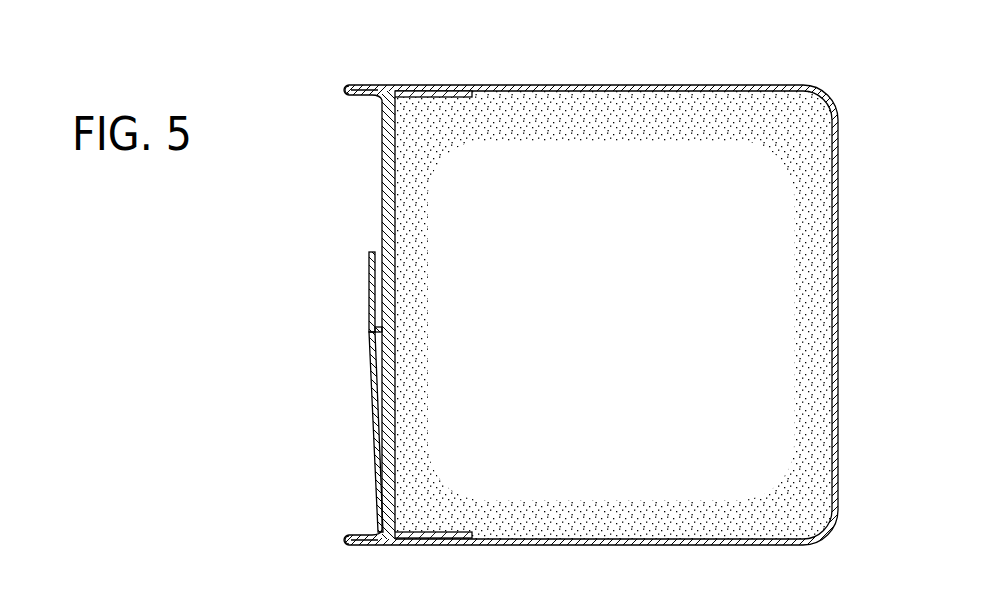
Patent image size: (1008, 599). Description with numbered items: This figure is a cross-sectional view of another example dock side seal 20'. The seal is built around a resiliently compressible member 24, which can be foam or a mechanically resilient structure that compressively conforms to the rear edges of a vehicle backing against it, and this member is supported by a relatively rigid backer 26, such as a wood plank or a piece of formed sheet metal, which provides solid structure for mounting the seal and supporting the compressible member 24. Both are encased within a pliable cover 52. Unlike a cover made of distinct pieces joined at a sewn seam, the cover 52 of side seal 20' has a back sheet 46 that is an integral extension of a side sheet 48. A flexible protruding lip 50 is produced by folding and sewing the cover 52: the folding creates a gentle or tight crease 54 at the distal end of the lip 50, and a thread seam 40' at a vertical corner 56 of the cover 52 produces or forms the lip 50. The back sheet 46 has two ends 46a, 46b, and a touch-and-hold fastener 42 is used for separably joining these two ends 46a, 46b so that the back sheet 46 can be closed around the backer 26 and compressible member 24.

The side seal 20' is at (502, 313).
The compressible member 24 is at (740, 232).
The backer 26 is at (396, 218).
The thread seam 40' is at (367, 342).
The touch-and-hold fastener 42 is at (372, 252).
The back sheet 46 is at (381, 315).
The end of back sheet 46a is at (376, 383).
The end of back sheet 46b is at (383, 190).
The side sheet 48 is at (600, 85).
The lip 50 is at (354, 316).
The cover 52 is at (584, 315).
The crease 54 is at (343, 90).
The vertical corner 56 is at (384, 72).